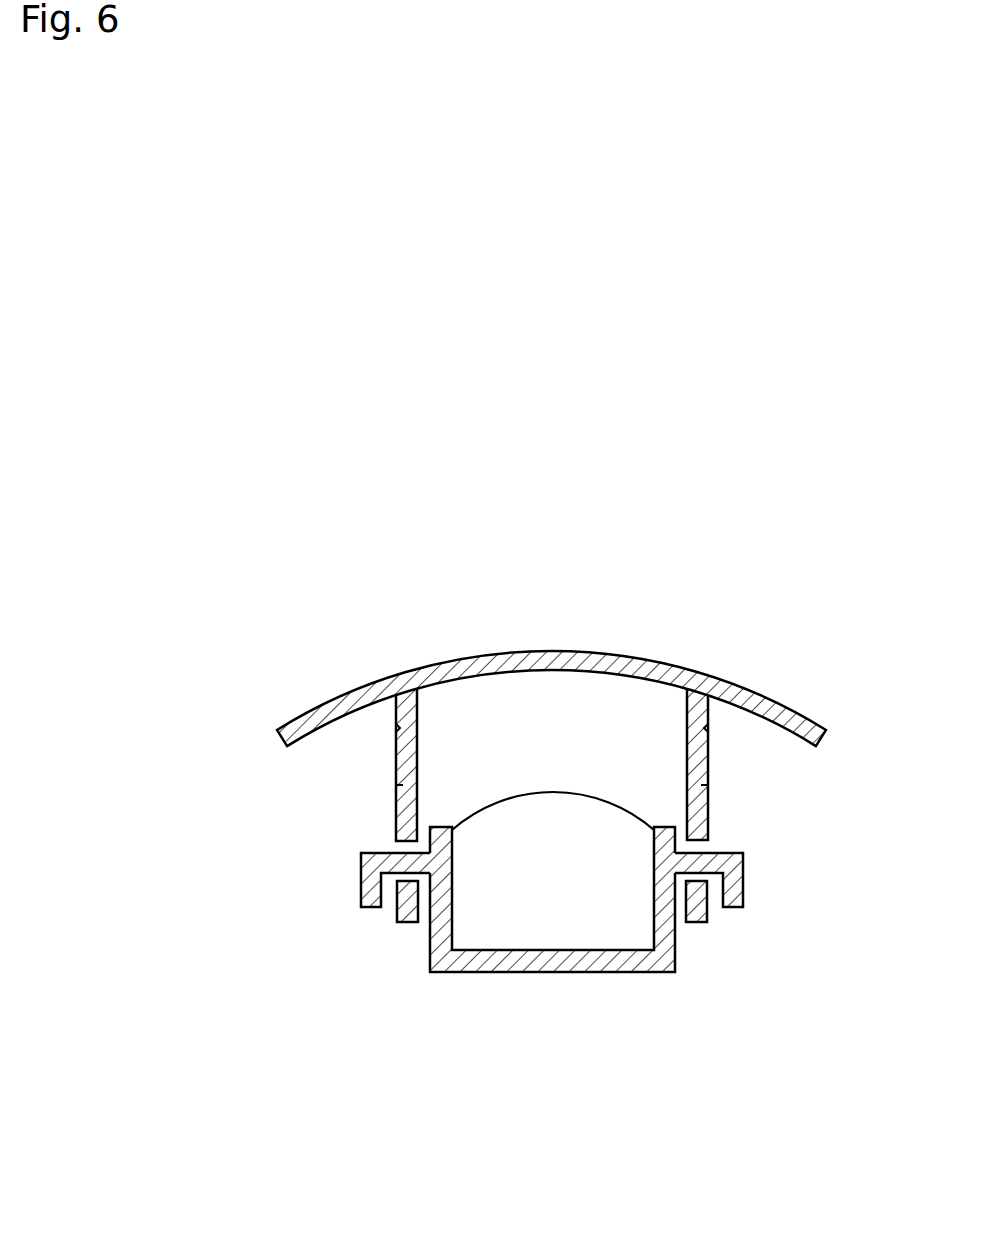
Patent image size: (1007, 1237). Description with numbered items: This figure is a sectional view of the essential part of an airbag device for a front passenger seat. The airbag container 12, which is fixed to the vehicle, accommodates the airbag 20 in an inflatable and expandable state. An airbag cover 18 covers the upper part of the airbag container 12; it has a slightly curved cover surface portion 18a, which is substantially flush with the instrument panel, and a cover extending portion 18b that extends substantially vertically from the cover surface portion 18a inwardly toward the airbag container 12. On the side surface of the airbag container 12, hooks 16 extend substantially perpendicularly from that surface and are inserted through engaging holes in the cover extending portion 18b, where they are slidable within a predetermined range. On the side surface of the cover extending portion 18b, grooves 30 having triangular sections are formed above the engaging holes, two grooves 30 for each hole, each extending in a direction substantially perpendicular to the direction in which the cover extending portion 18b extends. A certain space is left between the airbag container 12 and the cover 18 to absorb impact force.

The airbag container 12 is at (633, 974).
The hooks 16 is at (744, 879).
The airbag cover 18 is at (818, 707).
The cover surface portion 18a is at (583, 652).
The cover extending portion 18b is at (396, 797).
The airbag 20 is at (517, 810).
The grooves 30 is at (708, 728).